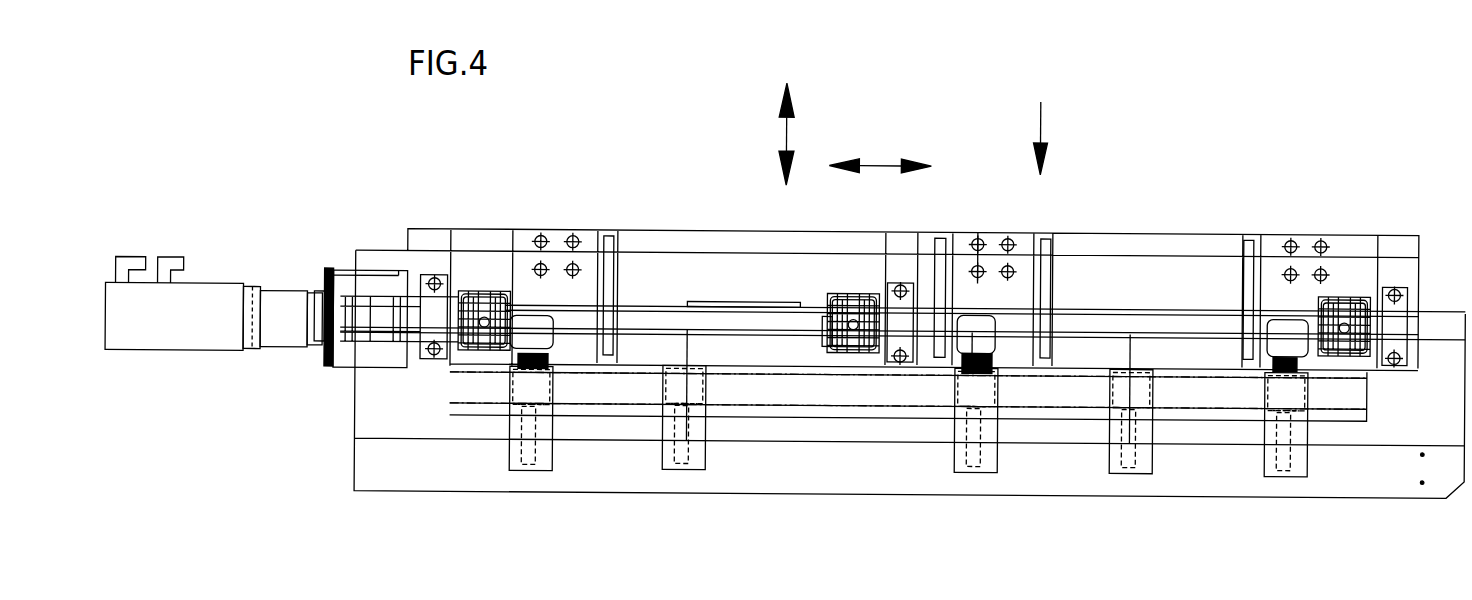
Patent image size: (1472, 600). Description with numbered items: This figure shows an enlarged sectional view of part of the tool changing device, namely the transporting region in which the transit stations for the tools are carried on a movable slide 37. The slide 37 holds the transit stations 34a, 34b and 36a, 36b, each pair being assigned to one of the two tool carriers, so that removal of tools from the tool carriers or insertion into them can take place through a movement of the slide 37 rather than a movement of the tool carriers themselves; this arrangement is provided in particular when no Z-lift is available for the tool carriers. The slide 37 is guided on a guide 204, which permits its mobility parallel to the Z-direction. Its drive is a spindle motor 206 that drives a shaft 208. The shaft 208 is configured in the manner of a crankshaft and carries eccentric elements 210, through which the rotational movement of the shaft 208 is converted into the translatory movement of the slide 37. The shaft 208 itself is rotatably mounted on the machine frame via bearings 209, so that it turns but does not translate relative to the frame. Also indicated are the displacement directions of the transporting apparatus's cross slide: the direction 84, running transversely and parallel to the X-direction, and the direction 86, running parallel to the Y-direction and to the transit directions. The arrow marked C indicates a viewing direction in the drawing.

The spindle motor 206 is at (217, 305).
The shaft 208 is at (627, 320).
The eccentric elements 210 is at (477, 301).
The guide 204 is at (1010, 355).
The bearings 209 is at (1390, 357).
The slide 37 is at (1367, 247).
The transit station 34a is at (604, 492).
The transit station 34b is at (777, 494).
The transit station 36a is at (1085, 489).
The transit station 36b is at (1223, 488).
The direction 84 is at (785, 133).
The direction 86 is at (882, 165).
The viewing direction C is at (1048, 135).